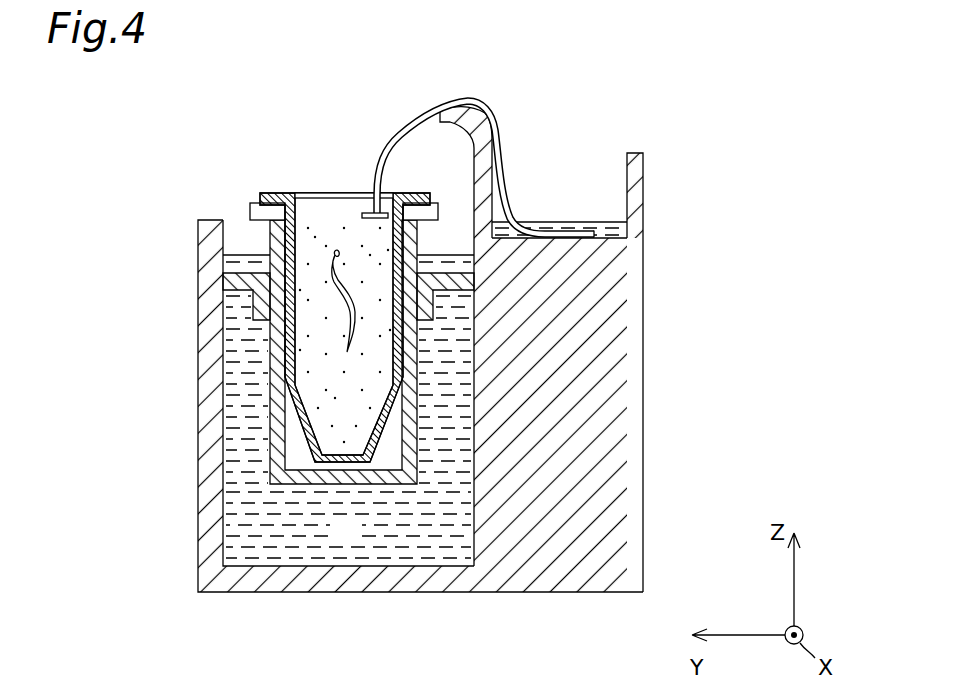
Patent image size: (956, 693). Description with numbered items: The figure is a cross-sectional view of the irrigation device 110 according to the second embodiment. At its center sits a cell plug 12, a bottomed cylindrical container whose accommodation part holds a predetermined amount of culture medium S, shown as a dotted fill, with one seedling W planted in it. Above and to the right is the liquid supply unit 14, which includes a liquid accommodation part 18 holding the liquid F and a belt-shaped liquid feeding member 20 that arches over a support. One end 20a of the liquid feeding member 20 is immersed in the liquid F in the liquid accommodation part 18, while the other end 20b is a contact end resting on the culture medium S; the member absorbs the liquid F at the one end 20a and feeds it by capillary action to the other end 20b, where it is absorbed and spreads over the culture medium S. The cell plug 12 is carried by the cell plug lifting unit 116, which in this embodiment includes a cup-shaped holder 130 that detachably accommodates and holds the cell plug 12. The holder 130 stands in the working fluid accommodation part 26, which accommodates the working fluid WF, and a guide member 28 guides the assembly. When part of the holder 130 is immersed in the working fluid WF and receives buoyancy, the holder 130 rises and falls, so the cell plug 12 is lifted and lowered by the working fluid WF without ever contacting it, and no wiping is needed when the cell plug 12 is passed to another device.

The irrigation device 110 is at (741, 182).
The cell plug lifting unit 116 is at (219, 181).
The cell plug 12 is at (275, 193).
The cup-shaped holder 130 is at (398, 485).
The liquid supply unit 14 is at (528, 126).
The liquid accommodation part 18 is at (627, 197).
The liquid feeding member 20 is at (422, 115).
The one end 20a is at (587, 231).
The other end 20b is at (370, 208).
The working fluid accommodation part 26 is at (228, 502).
The guide member 28 is at (455, 282).
The liquid F is at (505, 231).
The seedling W is at (343, 299).
The culture medium S is at (350, 437).
The working fluid WF is at (358, 544).